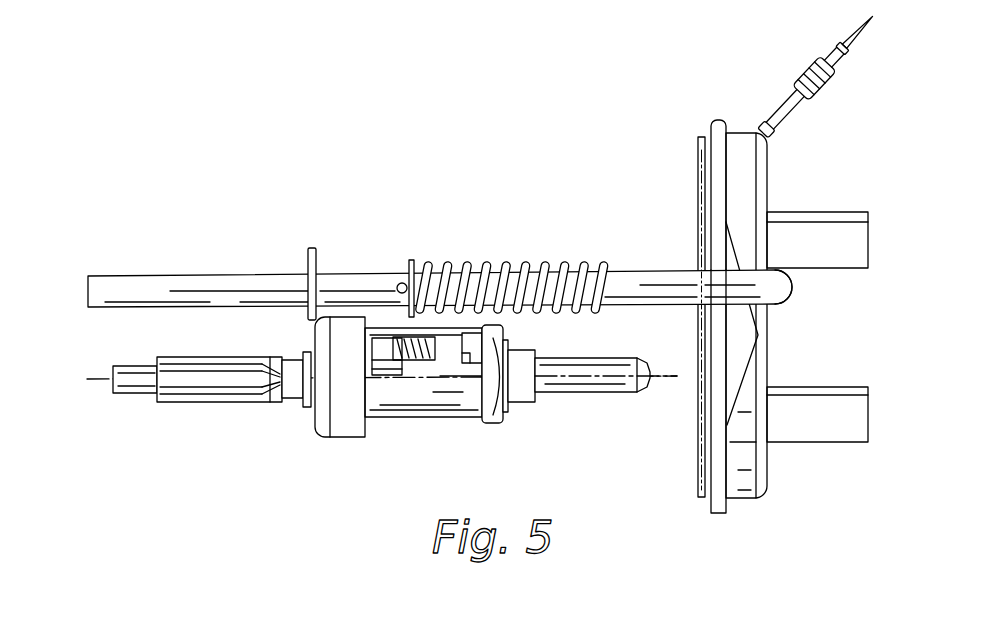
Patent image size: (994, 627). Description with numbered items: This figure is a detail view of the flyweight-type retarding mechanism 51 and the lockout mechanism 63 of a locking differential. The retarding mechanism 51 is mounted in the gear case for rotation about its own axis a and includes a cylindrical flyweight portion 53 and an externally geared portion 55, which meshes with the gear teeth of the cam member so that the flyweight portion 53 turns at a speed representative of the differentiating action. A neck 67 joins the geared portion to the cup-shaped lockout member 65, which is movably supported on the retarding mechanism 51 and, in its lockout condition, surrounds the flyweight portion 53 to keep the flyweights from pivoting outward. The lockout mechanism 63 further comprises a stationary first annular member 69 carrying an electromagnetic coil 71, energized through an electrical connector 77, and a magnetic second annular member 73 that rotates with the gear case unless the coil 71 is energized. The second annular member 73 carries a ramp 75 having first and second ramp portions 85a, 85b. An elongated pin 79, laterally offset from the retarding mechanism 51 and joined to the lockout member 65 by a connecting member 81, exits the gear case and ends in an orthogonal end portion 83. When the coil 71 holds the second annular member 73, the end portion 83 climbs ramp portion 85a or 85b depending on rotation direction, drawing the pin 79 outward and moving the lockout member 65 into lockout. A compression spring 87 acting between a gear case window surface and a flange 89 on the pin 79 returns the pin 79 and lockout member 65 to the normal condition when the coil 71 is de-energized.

The axis a is at (97, 381).
The retarding mechanism 51 is at (467, 436).
The cylindrical flyweight portion 53 is at (412, 403).
The externally geared portion 55 is at (229, 365).
The lockout mechanism 63 is at (287, 231).
The lockout member 65 is at (346, 424).
The shaft neck 67 is at (293, 397).
The first annular member 69 is at (745, 457).
The electromagnetic coil 71 is at (697, 200).
The second annular member 73 is at (727, 199).
The ramp 75 is at (733, 343).
The electrical connector 77 is at (820, 98).
The pin 79 is at (181, 283).
The connecting member 81 is at (316, 260).
The end portion 83 is at (778, 291).
The first ramp portion 85a is at (745, 250).
The second ramp portion 85b is at (742, 379).
The compression spring 87 is at (488, 263).
The flange 89 is at (421, 267).